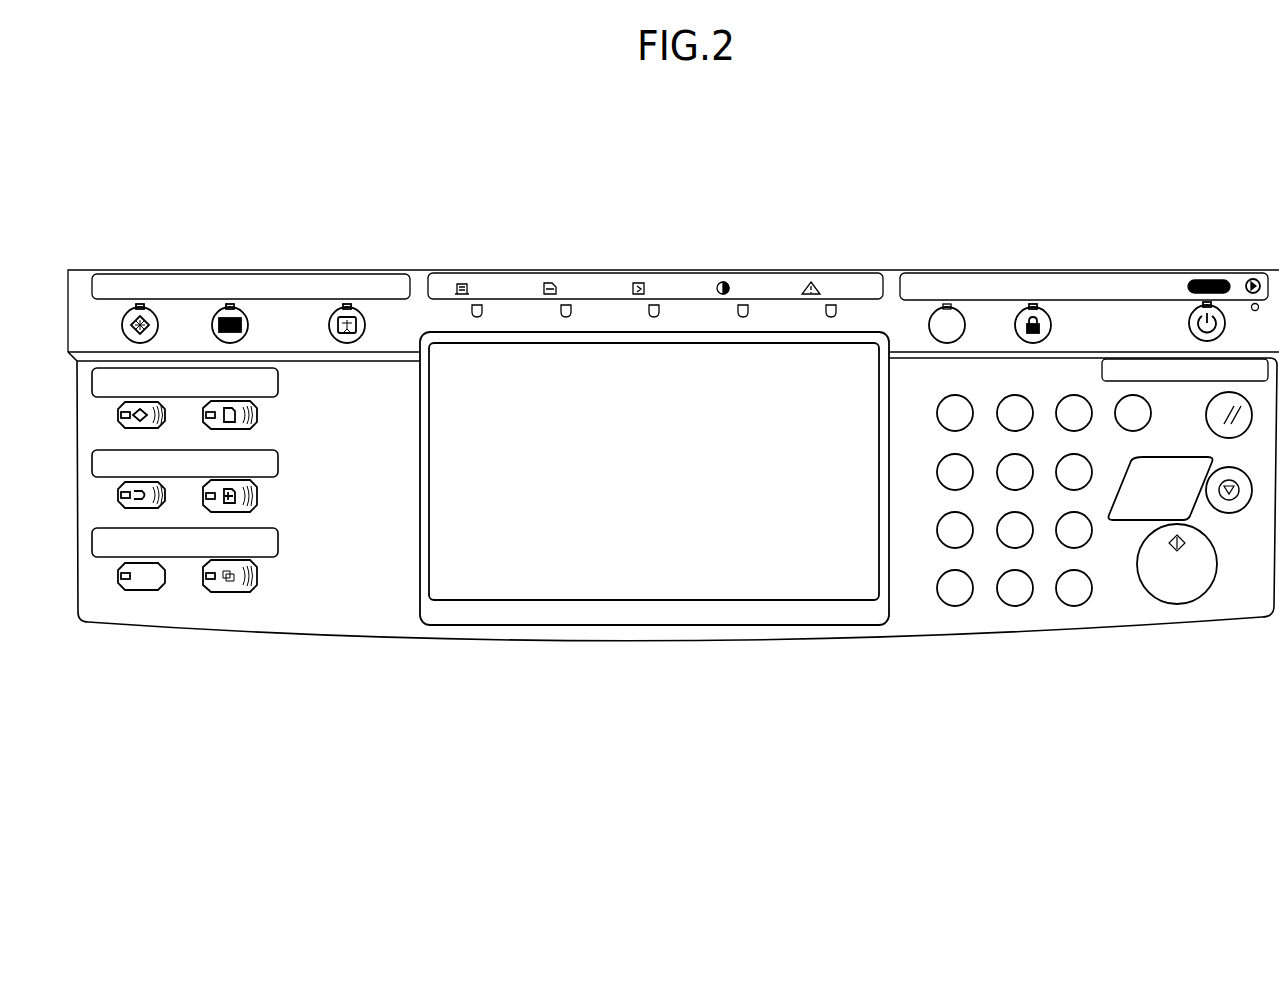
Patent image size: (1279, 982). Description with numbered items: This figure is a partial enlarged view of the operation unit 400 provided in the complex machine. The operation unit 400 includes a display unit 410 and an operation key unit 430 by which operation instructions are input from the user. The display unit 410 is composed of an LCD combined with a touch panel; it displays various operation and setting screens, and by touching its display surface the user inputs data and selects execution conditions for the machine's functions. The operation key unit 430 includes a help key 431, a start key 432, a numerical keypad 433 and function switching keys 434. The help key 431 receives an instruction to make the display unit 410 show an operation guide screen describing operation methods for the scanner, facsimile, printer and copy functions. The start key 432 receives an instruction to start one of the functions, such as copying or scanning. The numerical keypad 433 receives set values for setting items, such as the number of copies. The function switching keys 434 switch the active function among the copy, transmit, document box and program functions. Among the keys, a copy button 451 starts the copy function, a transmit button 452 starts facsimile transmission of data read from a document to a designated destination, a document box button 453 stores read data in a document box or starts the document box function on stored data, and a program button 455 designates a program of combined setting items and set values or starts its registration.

The operation unit 400 is at (911, 193).
The display unit 410 is at (557, 570).
The operation key unit 430 is at (1243, 600).
The help key 431 is at (964, 327).
The start key 432 is at (1169, 587).
The numerical keypad 433 is at (928, 607).
The function switching keys 434 is at (288, 594).
The copy button 451 is at (268, 385).
The transmit button 452 is at (268, 466).
The document box button 453 is at (273, 537).
The program button 455 is at (147, 442).